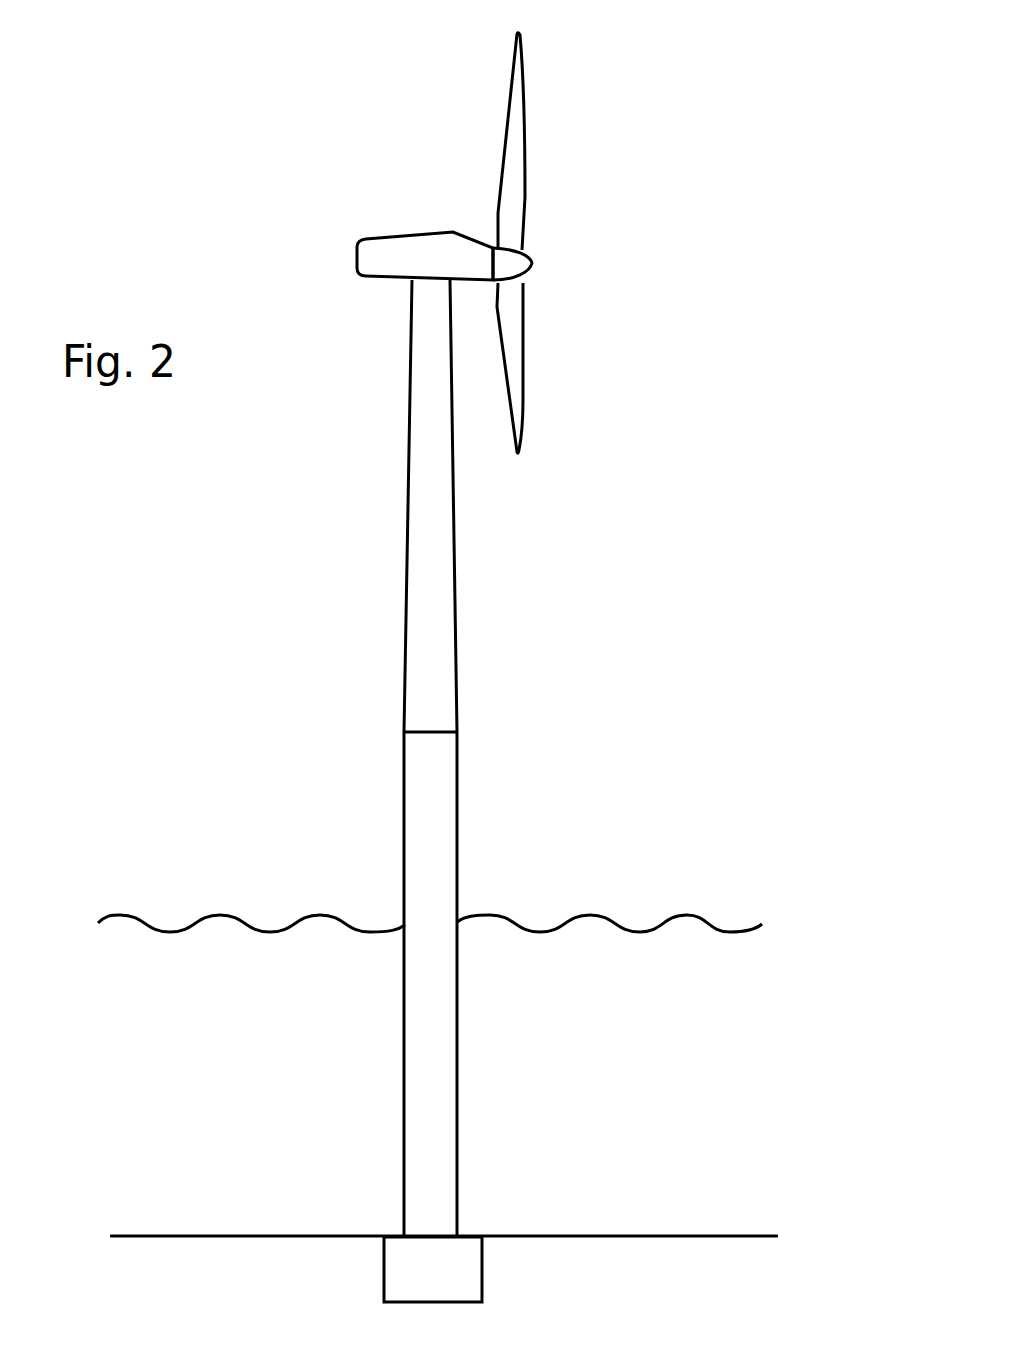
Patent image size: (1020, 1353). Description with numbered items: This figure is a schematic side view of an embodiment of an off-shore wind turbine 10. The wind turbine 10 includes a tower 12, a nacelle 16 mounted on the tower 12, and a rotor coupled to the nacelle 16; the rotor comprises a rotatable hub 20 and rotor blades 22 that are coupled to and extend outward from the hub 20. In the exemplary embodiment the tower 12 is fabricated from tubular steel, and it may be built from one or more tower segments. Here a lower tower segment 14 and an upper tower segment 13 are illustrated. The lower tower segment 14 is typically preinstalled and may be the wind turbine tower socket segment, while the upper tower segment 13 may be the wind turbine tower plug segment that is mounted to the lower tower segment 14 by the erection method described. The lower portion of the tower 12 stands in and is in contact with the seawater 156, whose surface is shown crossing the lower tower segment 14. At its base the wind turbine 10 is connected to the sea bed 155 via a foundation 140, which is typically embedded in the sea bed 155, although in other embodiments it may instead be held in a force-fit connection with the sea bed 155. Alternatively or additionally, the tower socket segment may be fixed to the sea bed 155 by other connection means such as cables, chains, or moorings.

The wind turbine 10 is at (252, 82).
The tower 12 is at (407, 605).
The upper tower segment 13 is at (446, 571).
The lower tower segment 14 is at (446, 997).
The nacelle 16 is at (357, 258).
The hub 20 is at (533, 263).
The rotor blade 22 is at (524, 132).
The foundation 140 is at (452, 1281).
The sea bed 155 is at (703, 1301).
The seawater 156 is at (754, 1052).